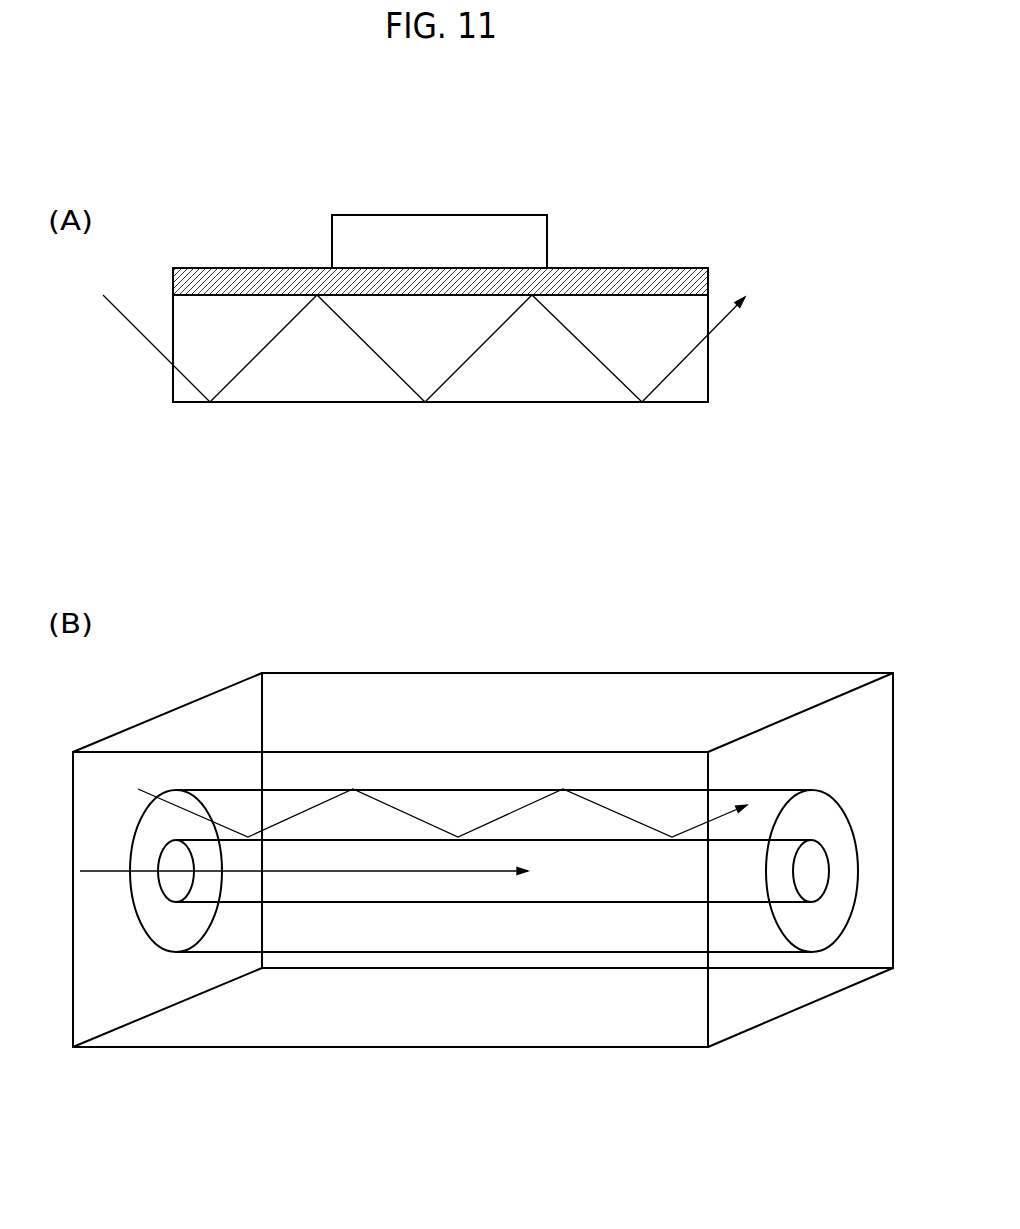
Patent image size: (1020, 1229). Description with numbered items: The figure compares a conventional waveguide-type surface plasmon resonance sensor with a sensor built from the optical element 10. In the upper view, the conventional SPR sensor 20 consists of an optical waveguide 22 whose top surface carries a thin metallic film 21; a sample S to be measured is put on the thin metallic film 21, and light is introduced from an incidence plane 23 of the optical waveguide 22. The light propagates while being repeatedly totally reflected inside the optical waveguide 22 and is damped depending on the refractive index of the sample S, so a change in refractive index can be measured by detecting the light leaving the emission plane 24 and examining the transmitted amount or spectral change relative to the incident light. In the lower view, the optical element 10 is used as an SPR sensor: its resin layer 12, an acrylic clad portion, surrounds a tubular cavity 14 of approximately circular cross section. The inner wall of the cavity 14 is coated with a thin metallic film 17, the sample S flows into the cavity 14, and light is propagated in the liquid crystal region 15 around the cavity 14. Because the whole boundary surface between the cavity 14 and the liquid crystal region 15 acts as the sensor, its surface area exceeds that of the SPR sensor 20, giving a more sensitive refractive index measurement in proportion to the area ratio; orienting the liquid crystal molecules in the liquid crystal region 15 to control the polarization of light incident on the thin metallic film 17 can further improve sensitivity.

The optical element 10 is at (690, 635).
The resin layer 12 is at (447, 708).
The cavity 14 is at (312, 883).
The liquid crystal region 15 is at (435, 929).
The thin metallic film 17 is at (545, 900).
The SPR sensor 20 is at (642, 188).
The thin metallic film 21 is at (708, 272).
The optical waveguide 22 is at (515, 388).
The incidence plane 23 is at (173, 392).
The emission plane 24 is at (708, 388).
The sample S is at (547, 226).